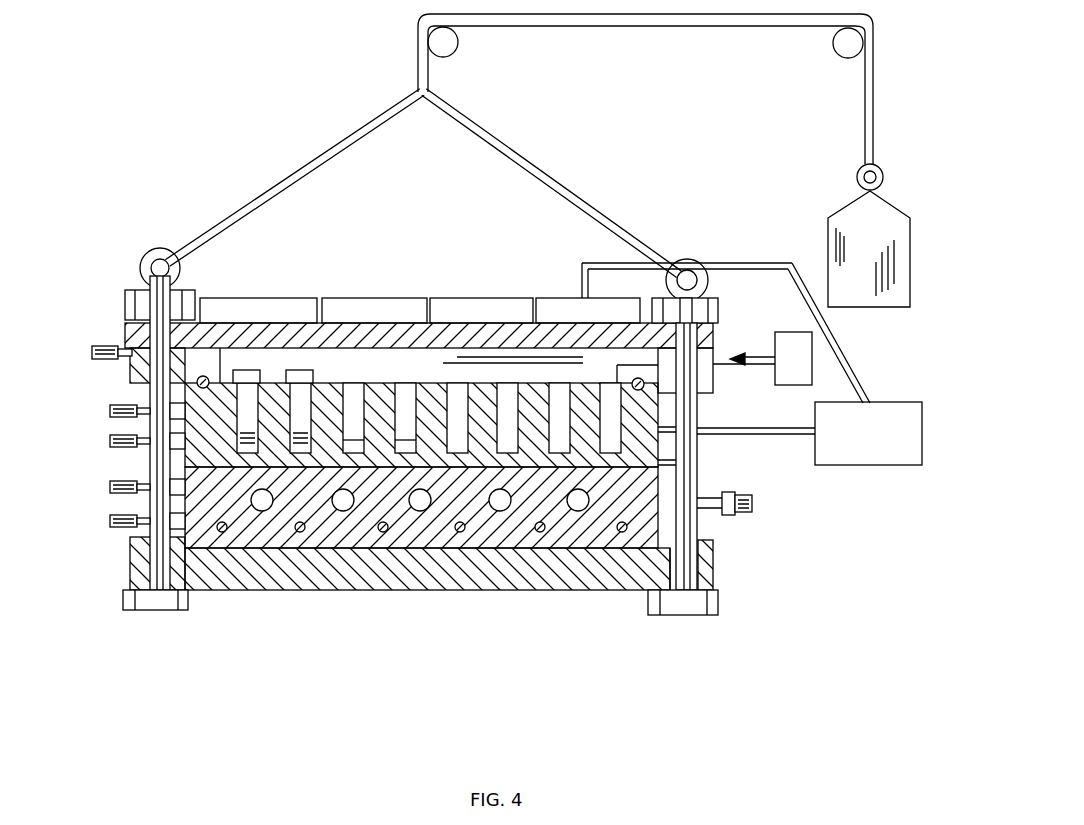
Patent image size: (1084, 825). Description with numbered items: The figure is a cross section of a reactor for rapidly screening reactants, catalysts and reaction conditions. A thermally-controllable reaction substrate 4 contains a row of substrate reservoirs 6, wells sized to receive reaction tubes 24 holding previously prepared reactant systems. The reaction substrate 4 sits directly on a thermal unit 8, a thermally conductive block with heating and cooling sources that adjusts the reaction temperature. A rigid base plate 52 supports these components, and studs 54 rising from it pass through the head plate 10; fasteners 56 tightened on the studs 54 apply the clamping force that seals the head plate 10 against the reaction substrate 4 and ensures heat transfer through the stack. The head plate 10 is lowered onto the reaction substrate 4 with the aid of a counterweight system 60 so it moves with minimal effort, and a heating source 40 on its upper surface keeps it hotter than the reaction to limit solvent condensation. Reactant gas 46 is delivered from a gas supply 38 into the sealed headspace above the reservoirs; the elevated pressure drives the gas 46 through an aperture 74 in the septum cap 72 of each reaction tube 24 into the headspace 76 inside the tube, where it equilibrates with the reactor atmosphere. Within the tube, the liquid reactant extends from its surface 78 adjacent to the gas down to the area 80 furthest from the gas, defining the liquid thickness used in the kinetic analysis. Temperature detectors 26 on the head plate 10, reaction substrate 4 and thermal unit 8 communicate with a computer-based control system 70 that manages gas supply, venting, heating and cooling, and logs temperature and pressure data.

The reaction substrate 4 is at (650, 417).
The substrate reservoir 6 is at (388, 415).
The thermal unit 8 is at (650, 527).
The head plate 10 is at (713, 340).
The reaction tubes 24 is at (222, 415).
The temperature detectors 26 is at (108, 346).
The gas supply 38 is at (762, 358).
The heating source 40 is at (490, 298).
The reactant gas 46 is at (547, 345).
The base plate 52 is at (690, 455).
The studs 54 is at (160, 380).
The fasteners 56 is at (135, 292).
The counterweight system 60 is at (848, 217).
The control system 70 is at (876, 453).
The septum cap 72 is at (243, 403).
The aperture 74 is at (257, 440).
The headspace inside reaction tubes 76 is at (300, 440).
The surface of liquid reactant 78 is at (355, 395).
The area of liquid reactant furthest from gas 80 is at (298, 468).